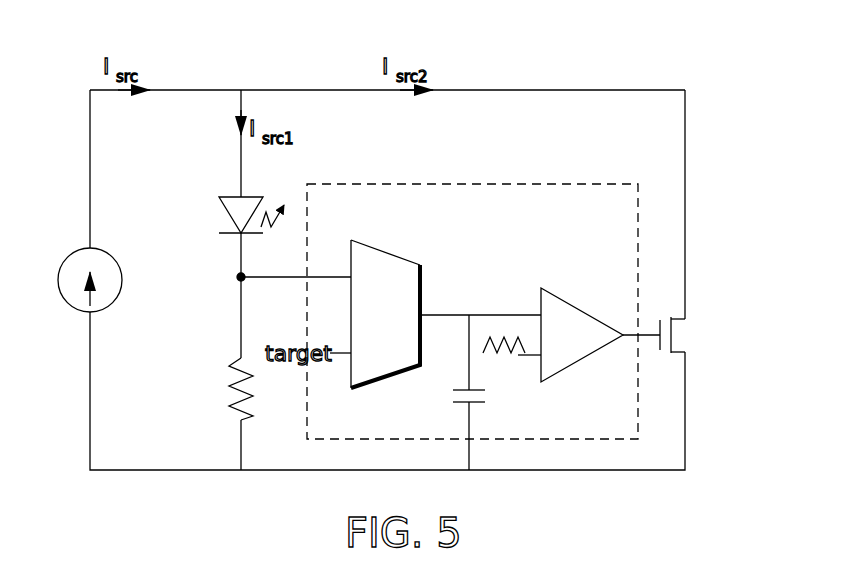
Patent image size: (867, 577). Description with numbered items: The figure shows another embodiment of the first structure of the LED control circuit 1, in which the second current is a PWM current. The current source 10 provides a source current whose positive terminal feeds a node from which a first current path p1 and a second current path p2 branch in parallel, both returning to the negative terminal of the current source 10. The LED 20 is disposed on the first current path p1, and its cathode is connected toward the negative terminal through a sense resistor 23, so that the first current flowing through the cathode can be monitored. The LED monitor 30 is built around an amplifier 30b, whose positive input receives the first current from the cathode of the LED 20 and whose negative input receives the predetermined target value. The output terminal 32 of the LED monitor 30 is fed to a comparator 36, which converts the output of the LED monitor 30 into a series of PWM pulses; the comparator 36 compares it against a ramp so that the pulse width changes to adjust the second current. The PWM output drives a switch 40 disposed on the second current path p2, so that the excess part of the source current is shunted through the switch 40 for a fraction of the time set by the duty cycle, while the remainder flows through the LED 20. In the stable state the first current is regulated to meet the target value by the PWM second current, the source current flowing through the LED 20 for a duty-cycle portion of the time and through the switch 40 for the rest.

The LED control circuit 1 is at (527, 88).
The current source 10 is at (58, 282).
The LED 20 is at (228, 218).
The sense resistor 23 is at (232, 396).
The LED monitor 30 is at (517, 184).
The amplifier 30b is at (394, 250).
The output terminal 32 is at (422, 306).
The comparator 36 is at (568, 296).
The switch 40 is at (688, 336).
The first current path p1 is at (243, 86).
The second current path p2 is at (687, 86).